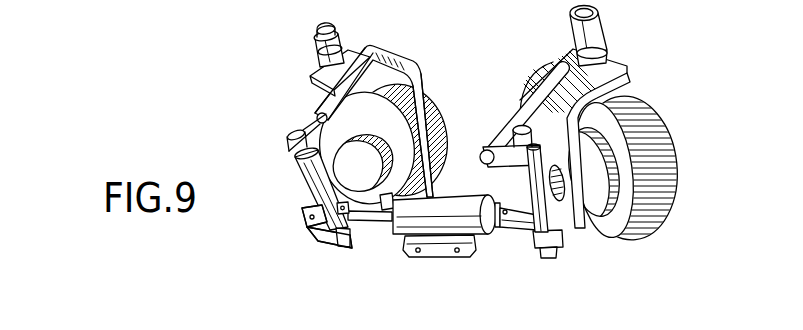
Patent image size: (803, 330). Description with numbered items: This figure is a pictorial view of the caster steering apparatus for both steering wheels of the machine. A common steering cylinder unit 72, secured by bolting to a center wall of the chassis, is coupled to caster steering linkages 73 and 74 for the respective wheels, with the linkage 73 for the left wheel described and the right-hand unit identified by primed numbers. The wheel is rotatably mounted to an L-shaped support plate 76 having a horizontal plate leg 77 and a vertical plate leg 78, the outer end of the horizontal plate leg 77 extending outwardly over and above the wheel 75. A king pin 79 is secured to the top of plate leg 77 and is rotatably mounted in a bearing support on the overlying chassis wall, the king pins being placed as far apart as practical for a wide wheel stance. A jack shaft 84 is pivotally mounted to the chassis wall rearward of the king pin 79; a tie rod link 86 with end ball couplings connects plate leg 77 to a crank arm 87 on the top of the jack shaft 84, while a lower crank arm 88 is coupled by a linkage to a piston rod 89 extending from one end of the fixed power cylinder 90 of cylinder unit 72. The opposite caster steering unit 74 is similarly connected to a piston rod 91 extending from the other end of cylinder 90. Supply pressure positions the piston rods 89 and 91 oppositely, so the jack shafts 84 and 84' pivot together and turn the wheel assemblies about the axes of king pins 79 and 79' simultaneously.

The steering cylinder unit 72 is at (470, 266).
The caster steering linkage 73 is at (330, 248).
The caster steering linkage 74 is at (565, 258).
The wheel 75 is at (415, 136).
The L-shaped support plate 76 is at (423, 77).
The horizontal plate leg 77 is at (375, 58).
The vertical plate leg 78 is at (428, 110).
The king pin 79 is at (295, 45).
The king pin 79' is at (604, 33).
The jack shaft 84 is at (300, 188).
The jack shaft 84' is at (590, 214).
The tie rod link 86 is at (318, 106).
The crank arm 87 is at (280, 155).
The crank arm 88 is at (318, 237).
The piston rod 89 is at (383, 212).
The cylinder 90 is at (468, 212).
The piston rod 91 is at (495, 214).